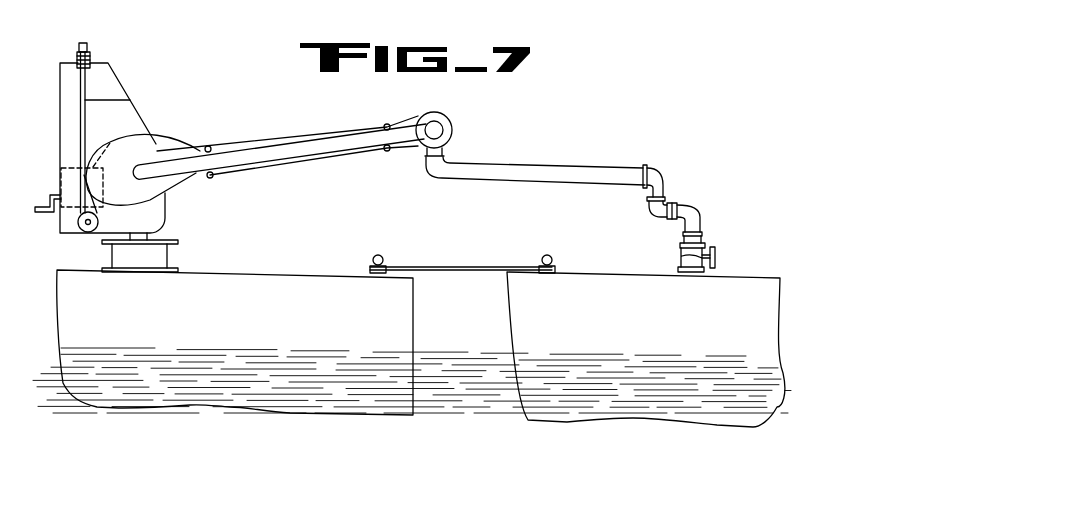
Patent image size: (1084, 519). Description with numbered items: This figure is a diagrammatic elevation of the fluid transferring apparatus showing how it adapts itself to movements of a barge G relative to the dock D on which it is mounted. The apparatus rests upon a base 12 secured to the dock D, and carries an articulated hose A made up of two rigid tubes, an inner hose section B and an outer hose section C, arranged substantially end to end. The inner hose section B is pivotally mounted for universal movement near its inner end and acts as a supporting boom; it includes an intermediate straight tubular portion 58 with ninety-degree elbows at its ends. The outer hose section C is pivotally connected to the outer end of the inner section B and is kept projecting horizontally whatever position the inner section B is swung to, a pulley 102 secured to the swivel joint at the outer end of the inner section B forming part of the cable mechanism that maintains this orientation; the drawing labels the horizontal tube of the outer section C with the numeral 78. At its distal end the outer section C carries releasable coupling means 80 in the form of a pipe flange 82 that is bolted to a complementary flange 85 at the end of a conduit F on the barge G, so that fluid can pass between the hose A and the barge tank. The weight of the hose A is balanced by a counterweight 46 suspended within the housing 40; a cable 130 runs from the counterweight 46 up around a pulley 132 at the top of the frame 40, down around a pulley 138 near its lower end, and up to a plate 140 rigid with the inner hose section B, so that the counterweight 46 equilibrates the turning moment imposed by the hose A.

The base 12 is at (172, 255).
The housing 40 is at (133, 83).
The counterweight 46 is at (108, 147).
The straight tubular portion 58 is at (300, 153).
The discharge pipe 78 is at (530, 172).
The releasable coupling means 80 is at (707, 207).
The pipe flange 82 is at (705, 234).
The complementary flange 85 is at (681, 256).
The pulley 102 is at (443, 117).
The cable 130 is at (130, 100).
The pulley 132 is at (87, 46).
The pulley 138 is at (100, 219).
The plate 140 is at (157, 150).
The articulated hose A is at (285, 133).
The inner hose section B is at (279, 140).
The outer hose section C is at (589, 209).
The dock D is at (243, 331).
The conduit F is at (697, 271).
The barge G is at (654, 337).